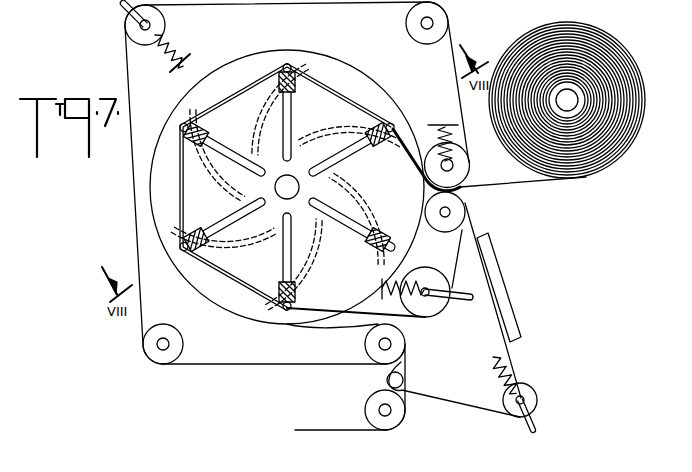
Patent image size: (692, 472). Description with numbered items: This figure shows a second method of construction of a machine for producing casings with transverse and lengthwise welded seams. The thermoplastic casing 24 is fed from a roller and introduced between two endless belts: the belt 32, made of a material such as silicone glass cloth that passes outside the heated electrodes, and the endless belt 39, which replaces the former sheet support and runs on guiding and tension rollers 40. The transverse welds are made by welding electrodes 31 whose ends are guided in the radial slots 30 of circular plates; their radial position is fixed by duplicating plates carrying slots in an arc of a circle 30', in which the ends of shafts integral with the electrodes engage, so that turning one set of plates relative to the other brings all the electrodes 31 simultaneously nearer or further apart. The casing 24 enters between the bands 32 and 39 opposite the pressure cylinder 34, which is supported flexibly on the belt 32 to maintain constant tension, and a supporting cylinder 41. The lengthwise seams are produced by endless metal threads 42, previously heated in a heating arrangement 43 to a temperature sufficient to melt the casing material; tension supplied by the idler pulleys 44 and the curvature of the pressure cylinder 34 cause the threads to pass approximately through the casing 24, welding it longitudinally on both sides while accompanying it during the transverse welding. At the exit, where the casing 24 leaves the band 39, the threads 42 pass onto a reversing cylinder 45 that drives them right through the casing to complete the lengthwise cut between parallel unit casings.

The casing 24 is at (592, 44).
The radial slots 30 is at (287, 166).
The slots in an arc of a circle 30' is at (226, 229).
The welding electrodes 31 is at (277, 287).
The endless belt 32 is at (459, 250).
The pressure cylinder 34 is at (466, 172).
The endless belt 39 is at (451, 60).
The guiding and tension rollers 40 is at (166, 22).
The supporting cylinder 41 is at (460, 210).
The endless metal threads 42 is at (476, 231).
The heating arrangement 43 is at (507, 282).
The idler pulleys 44 is at (533, 388).
The reversing cylinder 45 is at (403, 380).